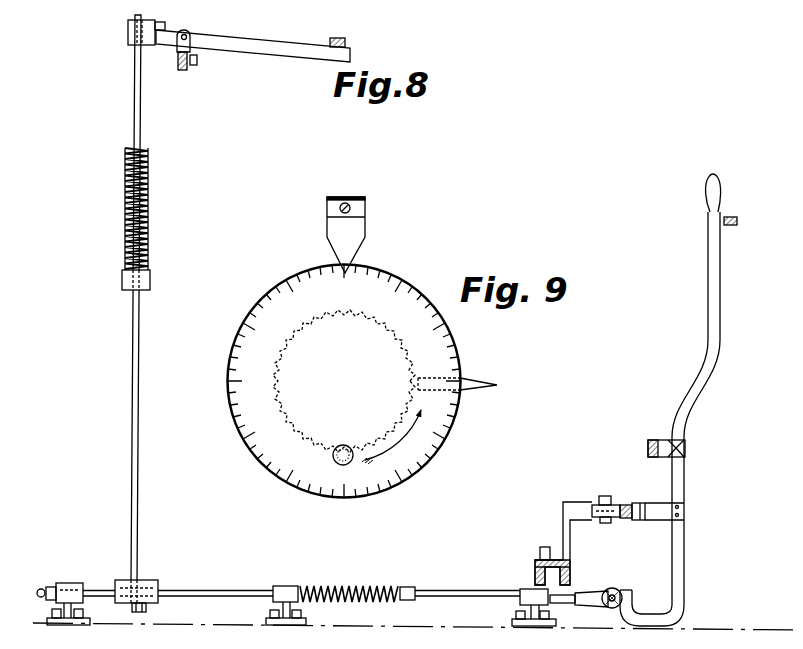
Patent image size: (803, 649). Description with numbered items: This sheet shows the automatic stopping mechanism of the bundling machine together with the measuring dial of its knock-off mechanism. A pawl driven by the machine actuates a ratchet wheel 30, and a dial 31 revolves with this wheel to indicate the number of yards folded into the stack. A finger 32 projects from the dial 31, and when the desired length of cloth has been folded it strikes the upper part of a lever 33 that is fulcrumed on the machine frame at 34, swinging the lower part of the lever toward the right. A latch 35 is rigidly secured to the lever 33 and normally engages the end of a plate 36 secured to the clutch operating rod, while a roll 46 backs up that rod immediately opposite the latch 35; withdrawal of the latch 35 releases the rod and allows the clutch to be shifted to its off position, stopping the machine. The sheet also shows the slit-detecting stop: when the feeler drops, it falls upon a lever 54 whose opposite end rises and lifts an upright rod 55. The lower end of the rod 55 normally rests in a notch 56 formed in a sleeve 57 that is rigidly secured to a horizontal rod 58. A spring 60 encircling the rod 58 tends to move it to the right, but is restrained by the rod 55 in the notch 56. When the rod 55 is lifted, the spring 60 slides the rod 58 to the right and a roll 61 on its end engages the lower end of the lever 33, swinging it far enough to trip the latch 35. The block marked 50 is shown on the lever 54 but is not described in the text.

In FIG. 9, the ratchet wheel 30 is at (300, 400).
In FIG. 9, the dial 31 is at (262, 462).
In FIG. 9, the finger 32 is at (487, 380).
In FIG. 9, the lever 33 is at (708, 292).
In FIG. 9, the fulcrum 34 is at (687, 449).
In FIG. 9, the latch 35 is at (660, 516).
In FIG. 9, the plate 36 is at (641, 512).
In FIG. 9, the roll 46 is at (593, 504).
In FIG. 8, the stop block 50 is at (346, 39).
In FIG. 8, the lever 54 is at (286, 30).
In FIG. 8, the upright rod 55 is at (141, 326).
In FIG. 9, the notch 56 is at (146, 606).
In FIG. 9, the sleeve 57 is at (628, 503).
In FIG. 9, the horizontal rod 58 is at (246, 577).
In FIG. 9, the spring 60 is at (372, 580).
In FIG. 9, the roll 61 is at (608, 606).